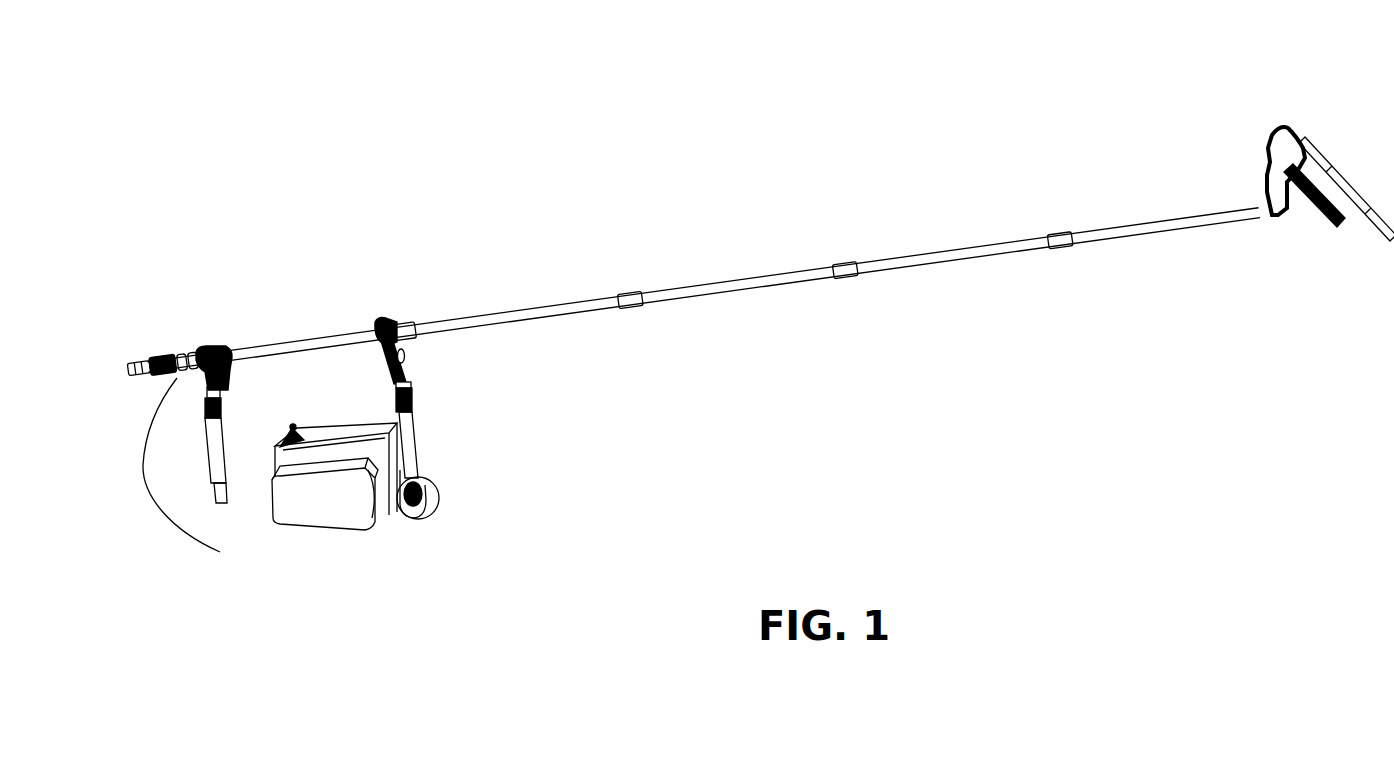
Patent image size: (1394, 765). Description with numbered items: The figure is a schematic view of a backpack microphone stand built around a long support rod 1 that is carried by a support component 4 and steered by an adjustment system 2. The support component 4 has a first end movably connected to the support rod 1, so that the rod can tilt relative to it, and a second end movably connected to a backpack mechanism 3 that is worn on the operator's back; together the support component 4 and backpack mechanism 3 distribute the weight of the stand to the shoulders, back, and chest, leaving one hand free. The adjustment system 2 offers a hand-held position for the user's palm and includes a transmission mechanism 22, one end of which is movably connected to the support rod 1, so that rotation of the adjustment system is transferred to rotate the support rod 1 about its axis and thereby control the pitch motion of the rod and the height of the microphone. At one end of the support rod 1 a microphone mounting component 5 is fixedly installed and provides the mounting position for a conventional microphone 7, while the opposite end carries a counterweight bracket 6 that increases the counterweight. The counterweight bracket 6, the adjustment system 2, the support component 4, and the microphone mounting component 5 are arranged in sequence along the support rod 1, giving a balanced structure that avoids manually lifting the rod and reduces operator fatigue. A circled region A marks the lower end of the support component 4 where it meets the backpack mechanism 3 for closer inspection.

The support rod 1 is at (325, 348).
The adjustment system 2 is at (207, 455).
The transmission mechanism 22 is at (220, 363).
The backpack mechanism 3 is at (375, 528).
The support component 4 is at (408, 410).
The microphone mounting component 5 is at (1302, 138).
The counterweight bracket 6 is at (160, 362).
The microphone 7 is at (1355, 197).
The detail area A is at (432, 505).